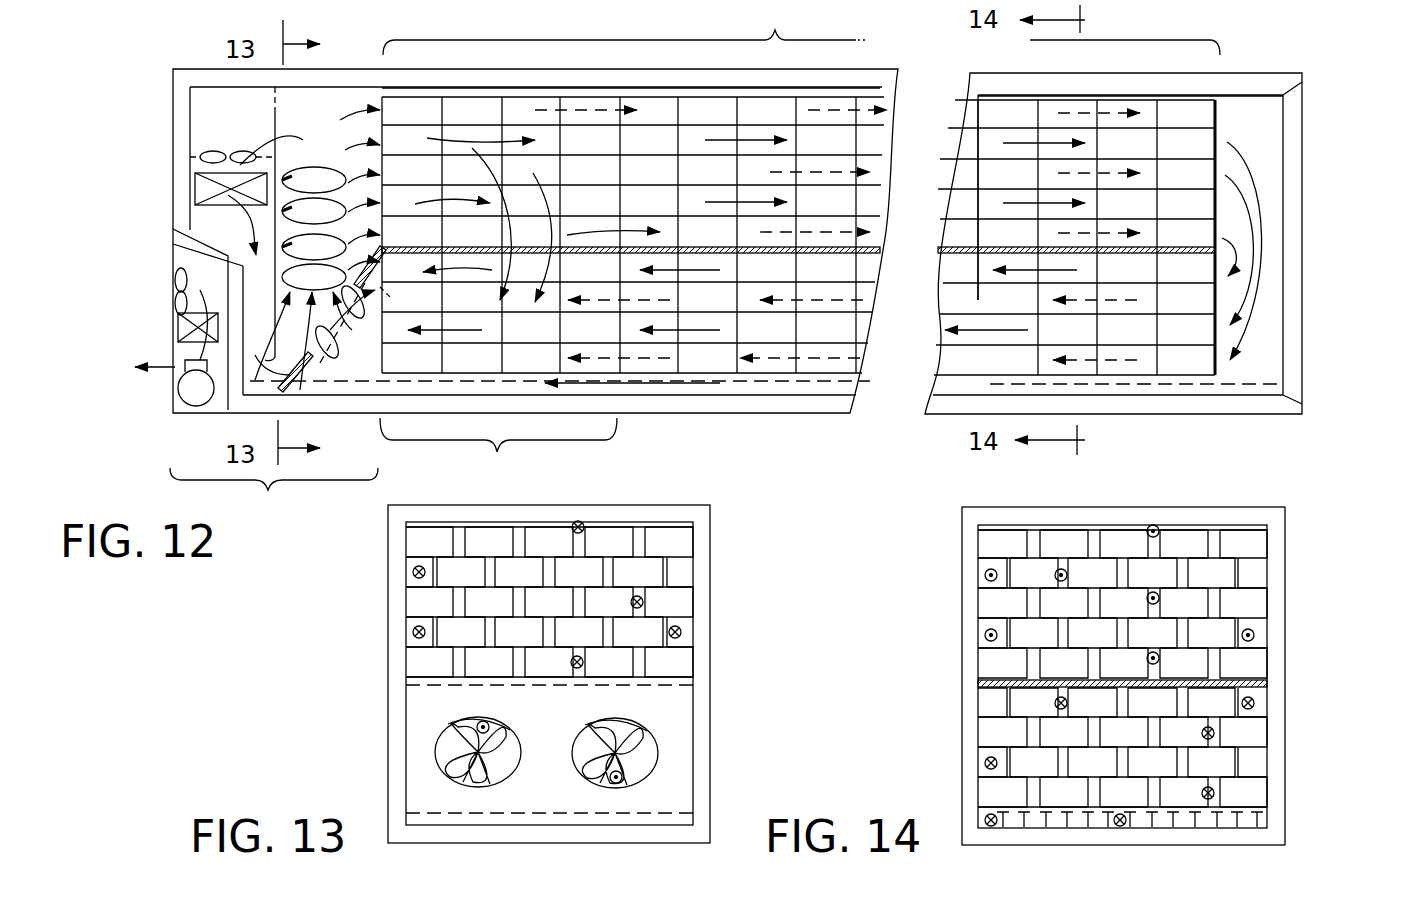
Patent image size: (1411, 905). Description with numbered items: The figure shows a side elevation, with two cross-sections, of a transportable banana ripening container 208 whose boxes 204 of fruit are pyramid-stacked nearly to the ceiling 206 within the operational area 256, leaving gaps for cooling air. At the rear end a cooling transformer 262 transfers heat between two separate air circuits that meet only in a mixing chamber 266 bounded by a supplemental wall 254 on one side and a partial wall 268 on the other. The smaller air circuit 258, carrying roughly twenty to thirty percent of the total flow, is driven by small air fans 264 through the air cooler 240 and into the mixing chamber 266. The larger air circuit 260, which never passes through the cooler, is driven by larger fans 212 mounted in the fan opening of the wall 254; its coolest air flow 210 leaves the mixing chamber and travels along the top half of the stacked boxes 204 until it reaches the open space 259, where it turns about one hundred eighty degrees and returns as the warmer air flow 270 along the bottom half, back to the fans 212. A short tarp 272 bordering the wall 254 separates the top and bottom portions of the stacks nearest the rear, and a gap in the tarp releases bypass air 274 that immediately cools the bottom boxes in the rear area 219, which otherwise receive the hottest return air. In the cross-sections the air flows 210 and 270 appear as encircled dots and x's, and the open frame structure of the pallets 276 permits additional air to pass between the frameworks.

In FIG. 12, the boxes 204 is at (717, 363).
In FIG. 13, the boxes 204 is at (685, 543).
In FIG. 14, the boxes 204 is at (992, 548).
In FIG. 12, the ceiling 206 is at (988, 88).
In FIG. 13, the ceiling 206 is at (665, 520).
In FIG. 14, the ceiling 206 is at (1000, 522).
In FIG. 12, the container 208 is at (784, 424).
In FIG. 13, the container 208 is at (378, 554).
In FIG. 14, the container 208 is at (1300, 565).
In FIG. 12, the air flow 210 is at (350, 113).
In FIG. 13, the air flow 210 is at (413, 574).
In FIG. 14, the air flow 210 is at (1153, 525).
In FIG. 12, the larger fans 212 is at (365, 355).
In FIG. 13, the larger fans 212 is at (604, 720).
In FIG. 12, the rear area 219 is at (498, 455).
In FIG. 12, the air cooler 240 is at (200, 192).
In FIG. 12, the supplemental wall 254 is at (308, 395).
In FIG. 13, the supplemental wall 254 is at (570, 796).
In FIG. 12, the operational area 256 is at (774, 37).
In FIG. 12, the smaller air circuit 258 is at (240, 148).
In FIG. 12, the open space 259 is at (1258, 125).
In FIG. 12, the larger air circuit 260 is at (1272, 200).
In FIG. 12, the cooling transformer 262 is at (268, 495).
In FIG. 12, the small air fans 264 is at (210, 156).
In FIG. 12, the mixing chamber 266 is at (320, 168).
In FIG. 12, the partial wall 268 is at (250, 278).
In FIG. 12, the air flow 270 is at (1000, 328).
In FIG. 13, the air flow 270 is at (483, 721).
In FIG. 14, the air flow 270 is at (1256, 704).
In FIG. 12, the tarp 272 is at (410, 248).
In FIG. 13, the tarp 272 is at (685, 677).
In FIG. 14, the tarp 272 is at (998, 683).
In FIG. 12, the bypass air 274 is at (555, 204).
In FIG. 14, the pallet frame structure 276 is at (1268, 827).